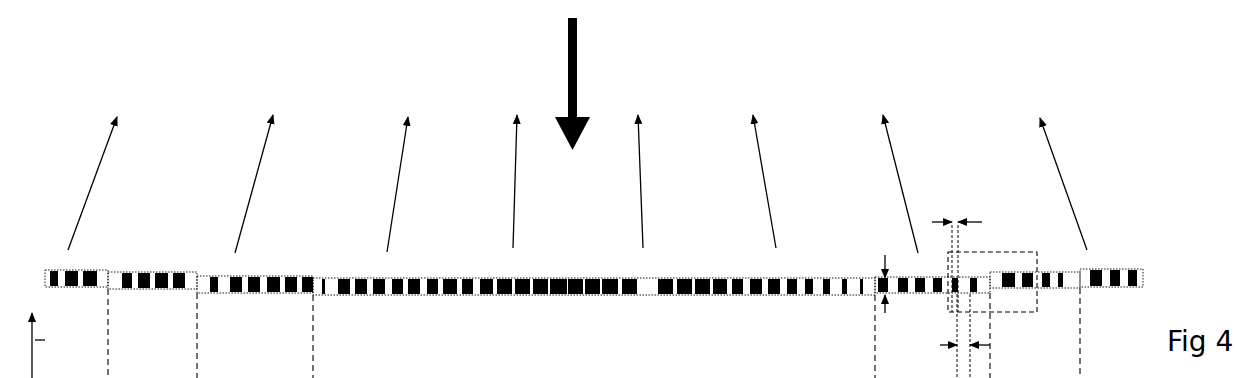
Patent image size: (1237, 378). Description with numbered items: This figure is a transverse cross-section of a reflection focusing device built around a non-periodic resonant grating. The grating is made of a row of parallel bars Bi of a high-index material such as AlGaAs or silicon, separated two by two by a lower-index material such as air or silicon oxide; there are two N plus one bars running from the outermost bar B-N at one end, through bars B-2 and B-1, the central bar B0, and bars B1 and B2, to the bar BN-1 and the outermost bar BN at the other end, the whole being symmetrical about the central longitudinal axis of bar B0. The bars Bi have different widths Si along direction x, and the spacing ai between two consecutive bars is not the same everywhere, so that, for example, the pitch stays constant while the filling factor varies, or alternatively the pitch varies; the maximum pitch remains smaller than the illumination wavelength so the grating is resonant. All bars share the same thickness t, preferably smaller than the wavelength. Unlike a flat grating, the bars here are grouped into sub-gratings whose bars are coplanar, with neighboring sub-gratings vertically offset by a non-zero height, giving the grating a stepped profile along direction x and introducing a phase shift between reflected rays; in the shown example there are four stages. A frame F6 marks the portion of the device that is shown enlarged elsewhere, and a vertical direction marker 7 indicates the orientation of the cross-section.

The bar B-N is at (53, 270).
The bar B-2 is at (558, 278).
The bar B-1 is at (580, 278).
The bar B0 is at (593, 278).
The bar B1 is at (617, 278).
The bar B2 is at (637, 278).
The bar Bi is at (952, 294).
The bar BN-1 is at (1117, 269).
The bar BN is at (1130, 269).
The width Si is at (970, 222).
The spacing ai is at (951, 345).
The thickness t is at (883, 260).
The frame F6 is at (1013, 252).
The axis / direction 7 is at (28, 345).